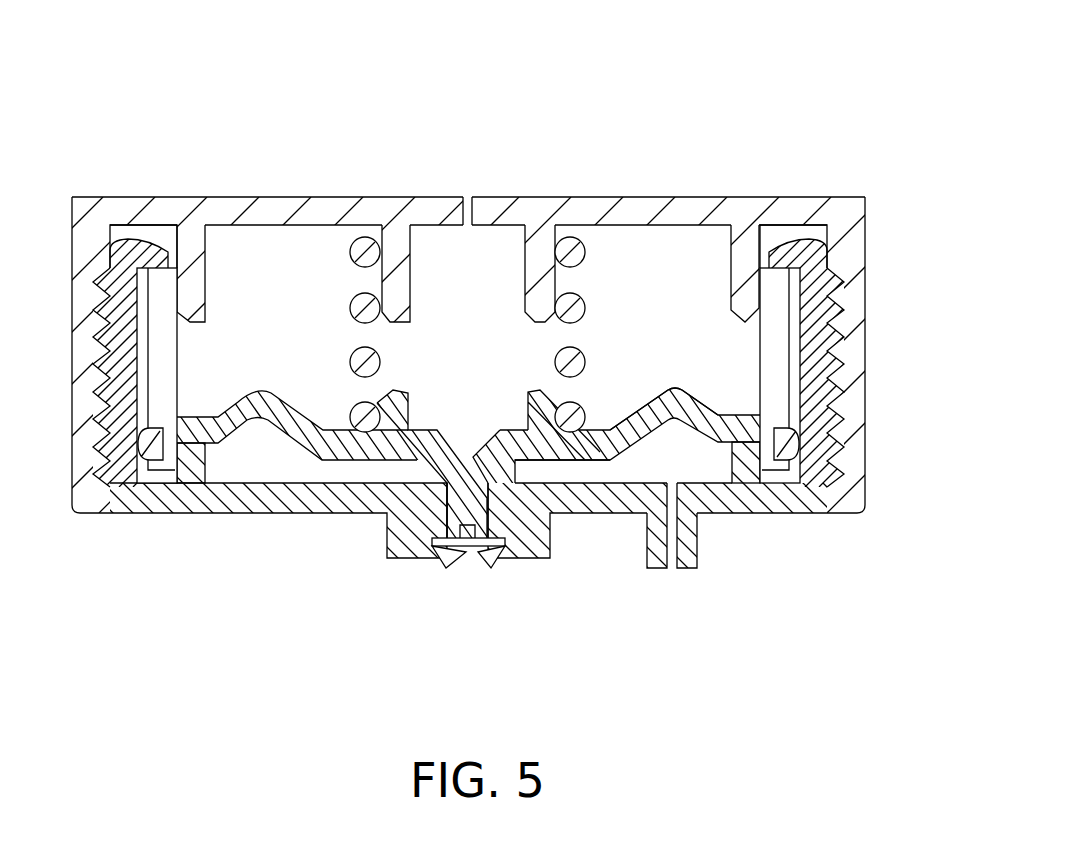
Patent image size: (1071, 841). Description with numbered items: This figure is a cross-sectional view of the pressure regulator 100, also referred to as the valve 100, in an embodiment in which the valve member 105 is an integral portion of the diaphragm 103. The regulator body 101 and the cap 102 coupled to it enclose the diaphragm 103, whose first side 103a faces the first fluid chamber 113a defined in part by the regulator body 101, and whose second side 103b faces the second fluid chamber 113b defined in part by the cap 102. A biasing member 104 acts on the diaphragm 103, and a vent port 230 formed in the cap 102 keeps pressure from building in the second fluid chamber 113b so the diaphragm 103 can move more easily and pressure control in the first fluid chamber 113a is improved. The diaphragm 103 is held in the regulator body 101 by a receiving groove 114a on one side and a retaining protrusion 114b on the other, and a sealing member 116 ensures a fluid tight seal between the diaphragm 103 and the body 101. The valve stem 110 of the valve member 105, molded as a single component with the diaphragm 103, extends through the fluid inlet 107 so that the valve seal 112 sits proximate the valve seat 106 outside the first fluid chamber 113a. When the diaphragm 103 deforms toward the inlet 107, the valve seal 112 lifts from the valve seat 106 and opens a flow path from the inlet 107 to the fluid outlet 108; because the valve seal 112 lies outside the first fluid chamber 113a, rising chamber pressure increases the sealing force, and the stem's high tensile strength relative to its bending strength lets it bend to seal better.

The pressure regulator 100 is at (692, 97).
The regulator body 101 is at (228, 515).
The cap 102 is at (842, 197).
The diaphragm 103 is at (312, 437).
The first side 103a is at (608, 476).
The second side 103b is at (651, 382).
The biasing member 104 is at (370, 240).
The valve member 105 is at (445, 505).
The valve seat 106 is at (432, 552).
The fluid inlet 107 is at (482, 580).
The fluid outlet 108 is at (695, 555).
The valve stem 110 is at (455, 470).
The valve seal 112 is at (500, 553).
The first fluid chamber 113a is at (228, 458).
The second fluid chamber 113b is at (270, 257).
The receiving groove 114a is at (745, 460).
The retaining protrusion 114b is at (785, 240).
The sealing member 116 is at (820, 447).
The vent port 230 is at (468, 220).